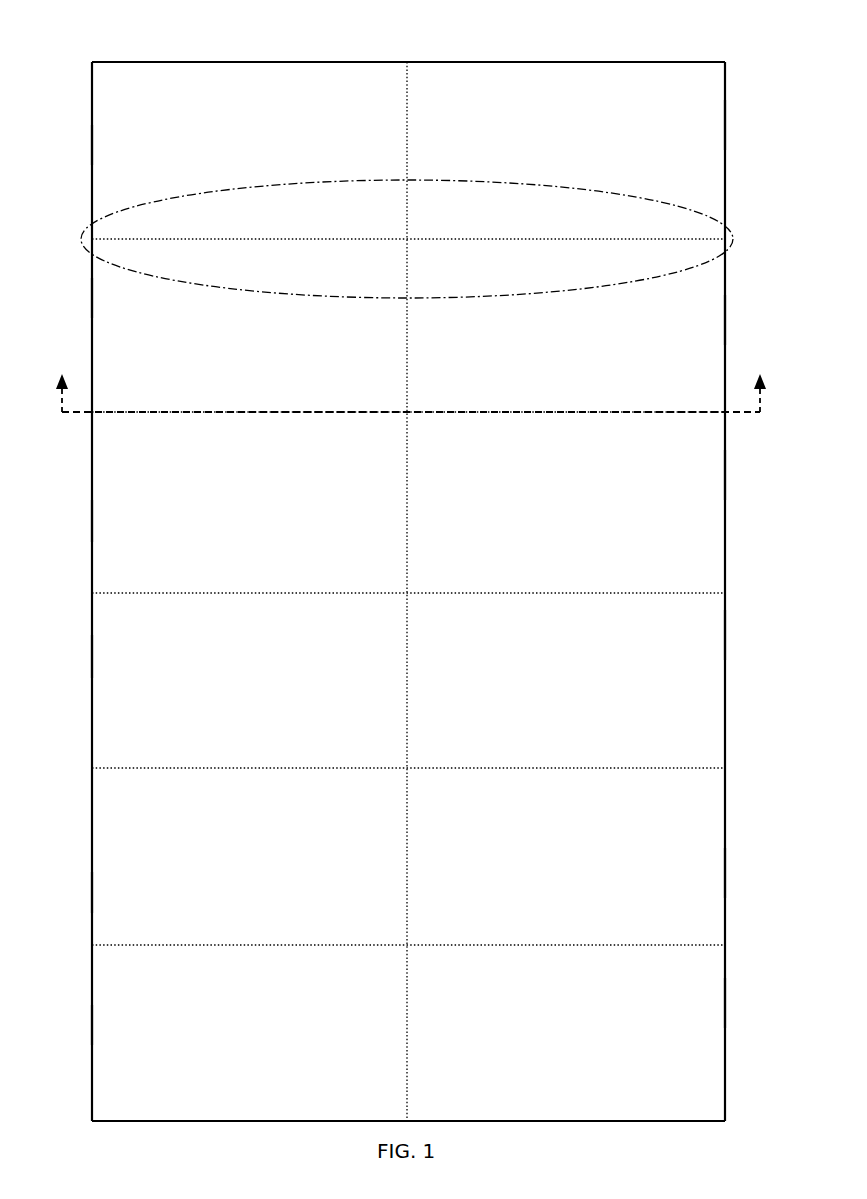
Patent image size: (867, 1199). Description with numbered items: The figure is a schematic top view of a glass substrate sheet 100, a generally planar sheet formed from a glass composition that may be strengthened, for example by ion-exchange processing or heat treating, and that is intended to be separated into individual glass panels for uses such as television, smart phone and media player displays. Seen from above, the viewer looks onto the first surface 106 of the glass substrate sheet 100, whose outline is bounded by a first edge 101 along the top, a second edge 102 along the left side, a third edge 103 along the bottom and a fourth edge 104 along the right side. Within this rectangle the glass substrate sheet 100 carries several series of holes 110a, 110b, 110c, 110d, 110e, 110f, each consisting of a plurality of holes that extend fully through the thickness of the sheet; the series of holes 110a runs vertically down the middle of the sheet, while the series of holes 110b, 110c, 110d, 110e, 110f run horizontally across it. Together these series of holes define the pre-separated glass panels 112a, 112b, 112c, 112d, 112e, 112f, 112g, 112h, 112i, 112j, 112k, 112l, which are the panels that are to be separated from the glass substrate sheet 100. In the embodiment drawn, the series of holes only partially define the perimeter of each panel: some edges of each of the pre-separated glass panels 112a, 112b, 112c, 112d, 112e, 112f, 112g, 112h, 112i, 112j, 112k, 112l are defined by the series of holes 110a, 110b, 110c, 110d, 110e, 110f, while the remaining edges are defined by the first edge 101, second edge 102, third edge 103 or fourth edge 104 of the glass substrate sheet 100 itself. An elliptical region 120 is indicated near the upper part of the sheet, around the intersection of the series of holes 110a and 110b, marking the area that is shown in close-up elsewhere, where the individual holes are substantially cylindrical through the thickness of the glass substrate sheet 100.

The glass substrate sheet 100 is at (757, 58).
The first edge 101 is at (141, 62).
The second edge 102 is at (92, 497).
The third edge 103 is at (700, 1118).
The fourth edge 104 is at (725, 705).
The first surface 106 is at (549, 531).
The series of holes 110a is at (404, 141).
The series of holes 110b is at (210, 238).
The series of holes 110c is at (270, 411).
The series of holes 110d is at (268, 592).
The series of holes 110e is at (265, 767).
The series of holes 110f is at (265, 944).
The pre-separated glass panel 112a is at (118, 142).
The pre-separated glass panel 112b is at (706, 140).
The pre-separated glass panel 112c is at (118, 295).
The pre-separated glass panel 112d is at (706, 336).
The pre-separated glass panel 112e is at (120, 517).
The pre-separated glass panel 112f is at (706, 491).
The pre-separated glass panel 112g is at (120, 651).
The pre-separated glass panel 112h is at (706, 650).
The pre-separated glass panel 112i is at (120, 890).
The pre-separated glass panel 112j is at (706, 888).
The pre-separated glass panel 112k is at (120, 1022).
The pre-separated glass panel 112l is at (706, 1018).
The region 120 is at (605, 190).